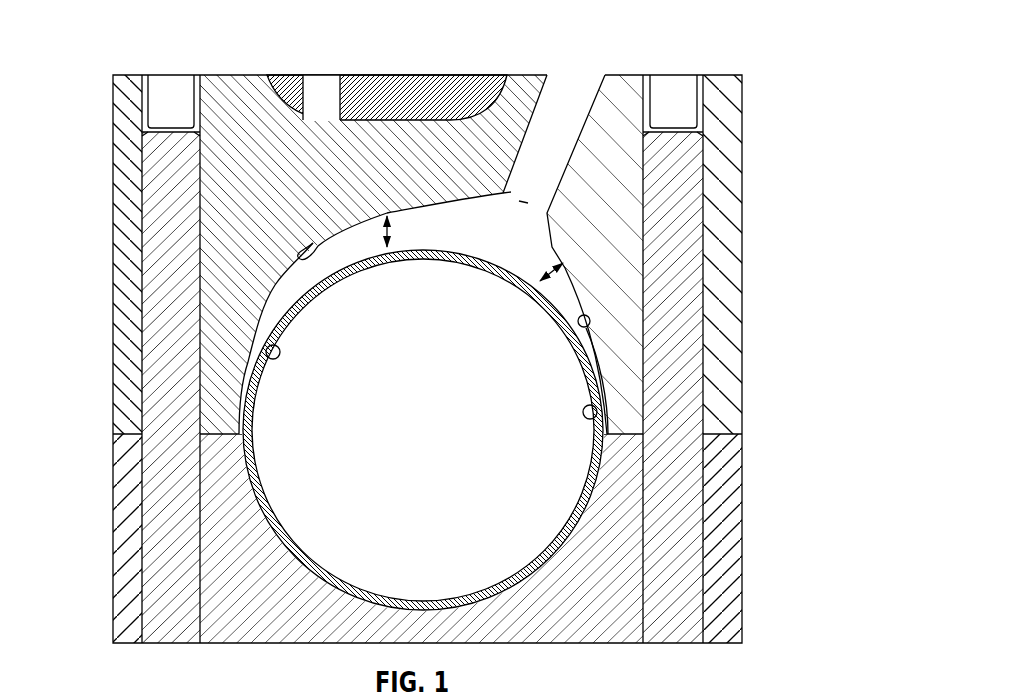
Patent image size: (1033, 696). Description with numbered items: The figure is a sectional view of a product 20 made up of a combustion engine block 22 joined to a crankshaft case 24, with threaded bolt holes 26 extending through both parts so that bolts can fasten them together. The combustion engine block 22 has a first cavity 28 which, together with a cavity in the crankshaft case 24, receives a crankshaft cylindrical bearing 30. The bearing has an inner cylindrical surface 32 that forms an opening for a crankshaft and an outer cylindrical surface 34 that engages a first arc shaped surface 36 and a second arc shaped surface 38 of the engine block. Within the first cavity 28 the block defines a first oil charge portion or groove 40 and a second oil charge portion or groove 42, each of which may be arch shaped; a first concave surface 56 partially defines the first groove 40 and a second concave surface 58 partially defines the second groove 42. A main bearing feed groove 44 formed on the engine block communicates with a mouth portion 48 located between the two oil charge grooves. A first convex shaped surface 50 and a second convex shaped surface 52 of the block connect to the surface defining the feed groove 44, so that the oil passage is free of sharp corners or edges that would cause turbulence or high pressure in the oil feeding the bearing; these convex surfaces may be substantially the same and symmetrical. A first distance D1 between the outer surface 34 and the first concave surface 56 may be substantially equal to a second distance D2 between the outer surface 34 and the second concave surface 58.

The product 20 is at (776, 299).
The combustion engine block 22 is at (747, 108).
The crankshaft case 24 is at (745, 558).
The threaded bolt holes 26 is at (143, 627).
The first cavity 28 is at (572, 391).
The crankshaft cylindrical bearing 30 is at (602, 385).
The inner cylindrical surface 32 is at (250, 355).
The outer cylindrical surface 34 is at (588, 316).
The first arc shaped surface 36 is at (243, 397).
The second arc shaped surface 38 is at (600, 411).
The first oil charge portion or groove 40 is at (277, 289).
The second oil charge portion or groove 42 is at (570, 286).
The main bearing feed groove 44 is at (586, 72).
The mouth portion 48 is at (513, 207).
The first convex shaped surface 50 is at (445, 200).
The second convex shaped surface 52 is at (582, 264).
The first concave surface 56 is at (303, 257).
The second concave surface 58 is at (605, 345).
The first distance D1 is at (383, 229).
The second distance D2 is at (552, 270).